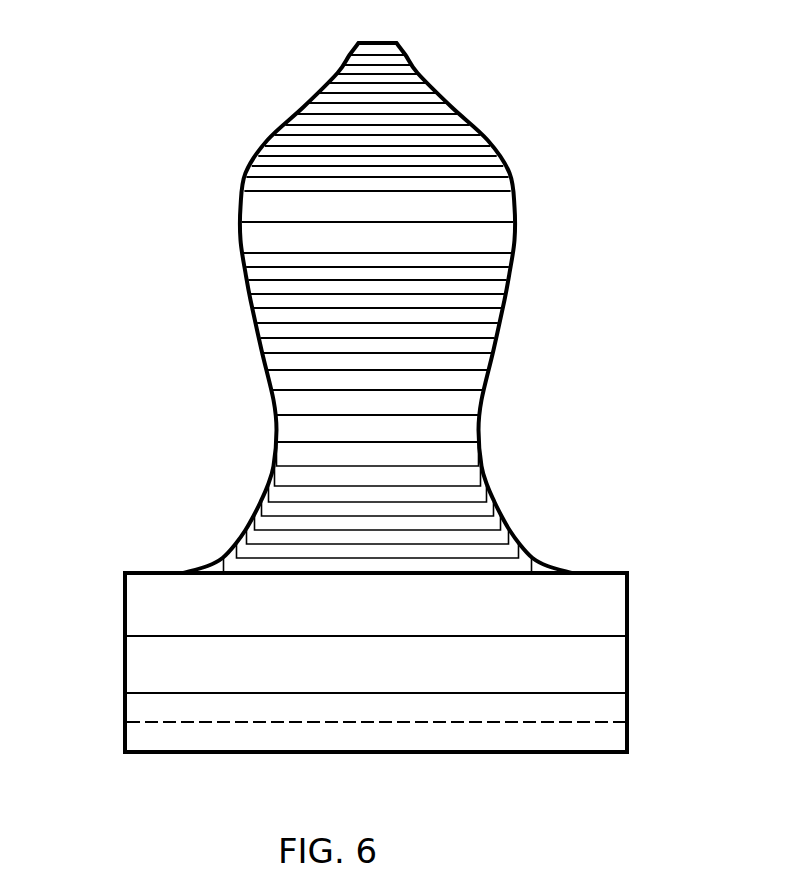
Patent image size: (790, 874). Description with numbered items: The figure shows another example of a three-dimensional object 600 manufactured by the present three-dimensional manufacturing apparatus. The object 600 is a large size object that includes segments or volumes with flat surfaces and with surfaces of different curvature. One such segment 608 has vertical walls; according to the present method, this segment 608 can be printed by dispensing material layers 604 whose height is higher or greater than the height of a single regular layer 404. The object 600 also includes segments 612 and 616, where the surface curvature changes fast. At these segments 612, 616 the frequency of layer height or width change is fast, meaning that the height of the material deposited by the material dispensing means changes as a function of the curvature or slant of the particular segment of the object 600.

The 3D object 600 is at (186, 201).
The material layers 604 is at (376, 662).
The segment with vertical walls 608 is at (500, 237).
The segment 612 is at (538, 516).
The segment 616 is at (309, 68).
The regular layer 404 is at (612, 743).